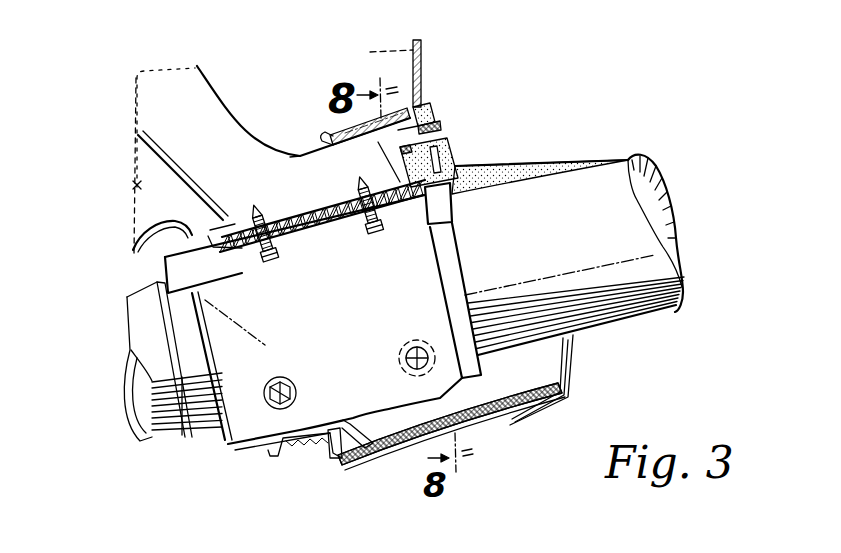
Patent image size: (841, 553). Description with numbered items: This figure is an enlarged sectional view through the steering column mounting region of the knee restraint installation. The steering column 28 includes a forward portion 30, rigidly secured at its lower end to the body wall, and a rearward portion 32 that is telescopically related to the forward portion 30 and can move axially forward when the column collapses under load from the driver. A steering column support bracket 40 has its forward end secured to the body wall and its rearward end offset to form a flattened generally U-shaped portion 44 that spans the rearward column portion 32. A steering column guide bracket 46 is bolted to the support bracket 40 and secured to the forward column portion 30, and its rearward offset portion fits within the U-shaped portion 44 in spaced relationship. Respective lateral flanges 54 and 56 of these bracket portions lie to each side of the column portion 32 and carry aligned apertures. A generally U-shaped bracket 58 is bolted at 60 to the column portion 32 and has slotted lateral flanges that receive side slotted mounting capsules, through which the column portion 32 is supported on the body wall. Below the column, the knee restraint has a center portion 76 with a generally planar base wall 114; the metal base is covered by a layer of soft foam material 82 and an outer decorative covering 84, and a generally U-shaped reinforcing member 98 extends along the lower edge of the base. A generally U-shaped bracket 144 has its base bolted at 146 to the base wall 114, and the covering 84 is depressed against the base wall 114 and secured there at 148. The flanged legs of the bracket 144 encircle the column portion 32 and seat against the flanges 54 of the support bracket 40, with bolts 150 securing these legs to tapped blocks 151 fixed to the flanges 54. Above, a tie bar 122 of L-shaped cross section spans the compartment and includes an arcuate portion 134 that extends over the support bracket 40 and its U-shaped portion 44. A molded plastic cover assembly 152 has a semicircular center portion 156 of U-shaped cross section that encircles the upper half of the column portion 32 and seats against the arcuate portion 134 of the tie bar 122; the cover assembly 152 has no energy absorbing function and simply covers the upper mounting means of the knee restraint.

The column 28 is at (626, 155).
The forward portion 30 is at (142, 333).
The rearward portion 32 is at (640, 250).
The steering column support bracket 40 is at (224, 87).
The flattened generally U-shaped portion 44 is at (287, 156).
The steering column guide bracket 46 is at (133, 185).
The lateral flanges 54 is at (320, 212).
The lateral flanges 56 is at (137, 273).
The generally U-shaped bracket 58 is at (458, 251).
The bolts 60 is at (417, 338).
The center portion 76 is at (505, 414).
The soft foam material 82 is at (367, 465).
The outer decorative covering 84 is at (525, 400).
The reinforcing member 98 is at (320, 432).
The base wall 114 is at (530, 398).
The tie bar 122 is at (408, 113).
The arcuate portion 134 is at (354, 133).
The generally U-shaped bracket 144 is at (272, 296).
The bolts 146 is at (462, 428).
The covering attachment area 148 is at (428, 450).
The bolts 150 is at (370, 222).
The tapped blocks 151 is at (272, 208).
The cover assembly 152 is at (456, 160).
The semicircular center portion 156 is at (438, 132).